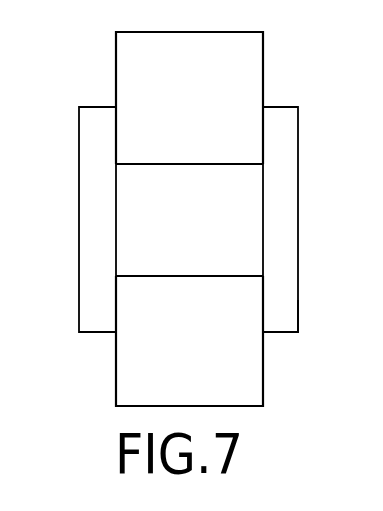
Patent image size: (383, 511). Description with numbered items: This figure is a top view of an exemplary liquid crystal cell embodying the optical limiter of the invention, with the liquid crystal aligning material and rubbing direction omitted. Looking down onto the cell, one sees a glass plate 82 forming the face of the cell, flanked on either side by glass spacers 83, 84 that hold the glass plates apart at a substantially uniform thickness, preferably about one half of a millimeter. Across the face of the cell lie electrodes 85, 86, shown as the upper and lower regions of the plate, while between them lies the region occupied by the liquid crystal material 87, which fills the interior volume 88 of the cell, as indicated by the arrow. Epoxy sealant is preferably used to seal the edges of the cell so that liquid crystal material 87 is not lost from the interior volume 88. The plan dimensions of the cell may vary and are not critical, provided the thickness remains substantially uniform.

The glass plate 82 is at (279, 107).
The glass spacer 83 is at (96, 311).
The glass spacer 84 is at (285, 322).
The electrode 85 is at (163, 42).
The electrode 86 is at (137, 367).
The liquid crystal material 87 is at (135, 177).
The interior volume 88 is at (146, 236).